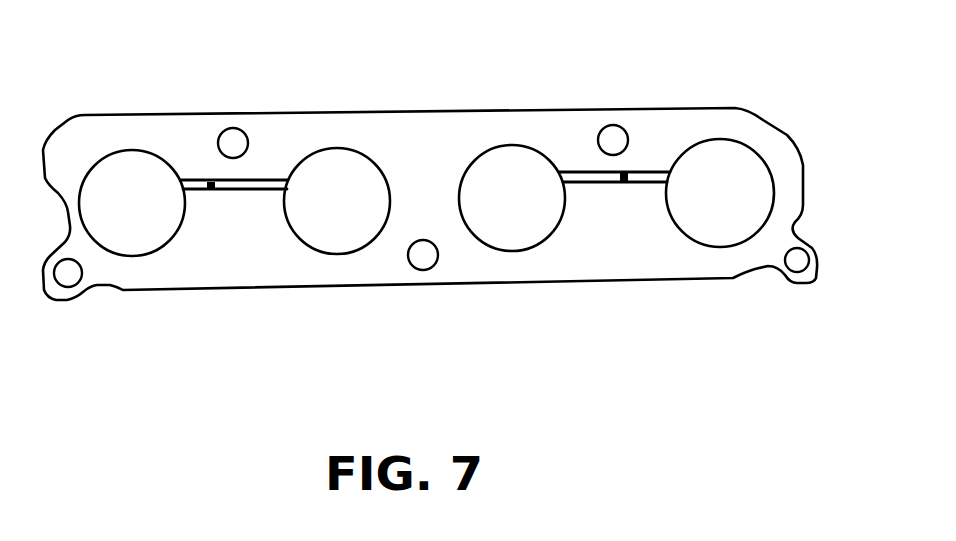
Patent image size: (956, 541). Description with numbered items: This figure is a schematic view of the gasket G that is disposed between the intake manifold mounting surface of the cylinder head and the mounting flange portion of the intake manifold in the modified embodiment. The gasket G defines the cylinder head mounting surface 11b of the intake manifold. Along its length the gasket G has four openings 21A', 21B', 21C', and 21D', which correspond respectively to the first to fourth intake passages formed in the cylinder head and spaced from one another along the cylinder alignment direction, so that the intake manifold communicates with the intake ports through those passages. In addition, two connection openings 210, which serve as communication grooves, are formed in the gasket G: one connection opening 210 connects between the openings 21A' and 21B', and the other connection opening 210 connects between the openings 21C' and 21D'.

The gasket G is at (430, 196).
The cylinder head mounting surface 11b is at (465, 133).
The opening 21A' is at (723, 127).
The opening 21B' is at (512, 258).
The opening 21C' is at (337, 262).
The opening 21D' is at (132, 144).
The connection opening 210 is at (213, 189).